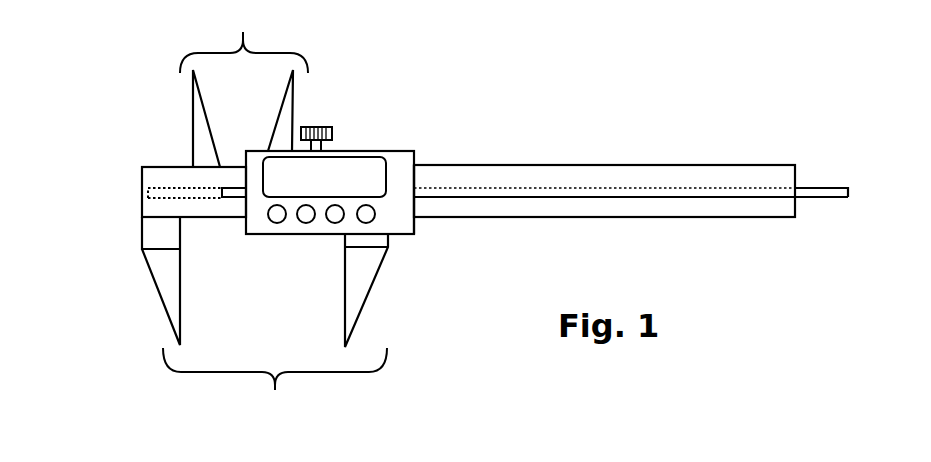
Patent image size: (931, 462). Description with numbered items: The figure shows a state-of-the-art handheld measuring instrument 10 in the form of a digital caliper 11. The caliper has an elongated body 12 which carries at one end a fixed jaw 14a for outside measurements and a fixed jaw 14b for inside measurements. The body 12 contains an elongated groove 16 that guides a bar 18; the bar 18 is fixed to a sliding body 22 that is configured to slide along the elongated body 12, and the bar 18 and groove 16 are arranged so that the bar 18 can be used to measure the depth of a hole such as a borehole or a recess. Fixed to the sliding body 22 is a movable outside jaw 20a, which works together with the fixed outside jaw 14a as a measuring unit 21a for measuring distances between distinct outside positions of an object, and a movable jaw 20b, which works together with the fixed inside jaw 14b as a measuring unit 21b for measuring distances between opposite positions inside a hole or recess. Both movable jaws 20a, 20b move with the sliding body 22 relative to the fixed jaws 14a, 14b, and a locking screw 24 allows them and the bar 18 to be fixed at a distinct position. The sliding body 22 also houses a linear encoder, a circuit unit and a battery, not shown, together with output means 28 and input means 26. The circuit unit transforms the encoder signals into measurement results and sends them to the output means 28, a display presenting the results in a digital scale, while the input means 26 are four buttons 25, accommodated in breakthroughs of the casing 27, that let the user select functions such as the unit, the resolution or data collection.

The handheld measuring instrument 10 is at (604, 145).
The digital caliper 11 is at (600, 136).
The elongated body 12 is at (157, 173).
The fixed jaw for outside measurements 14a is at (167, 272).
The fixed jaw for inside measurements 14b is at (202, 130).
The elongated groove 16 is at (157, 193).
The bar 18 is at (620, 195).
The movable outside jaw 20a is at (363, 260).
The movable jaw 20b is at (285, 120).
The measuring unit 21a is at (275, 390).
The measuring unit 21b is at (244, 36).
The sliding body 22 is at (412, 159).
The locking screw 24 is at (322, 127).
The buttons 25 is at (399, 213).
The input means 26 is at (365, 221).
The casing 27 is at (397, 223).
The output means 28 is at (362, 163).